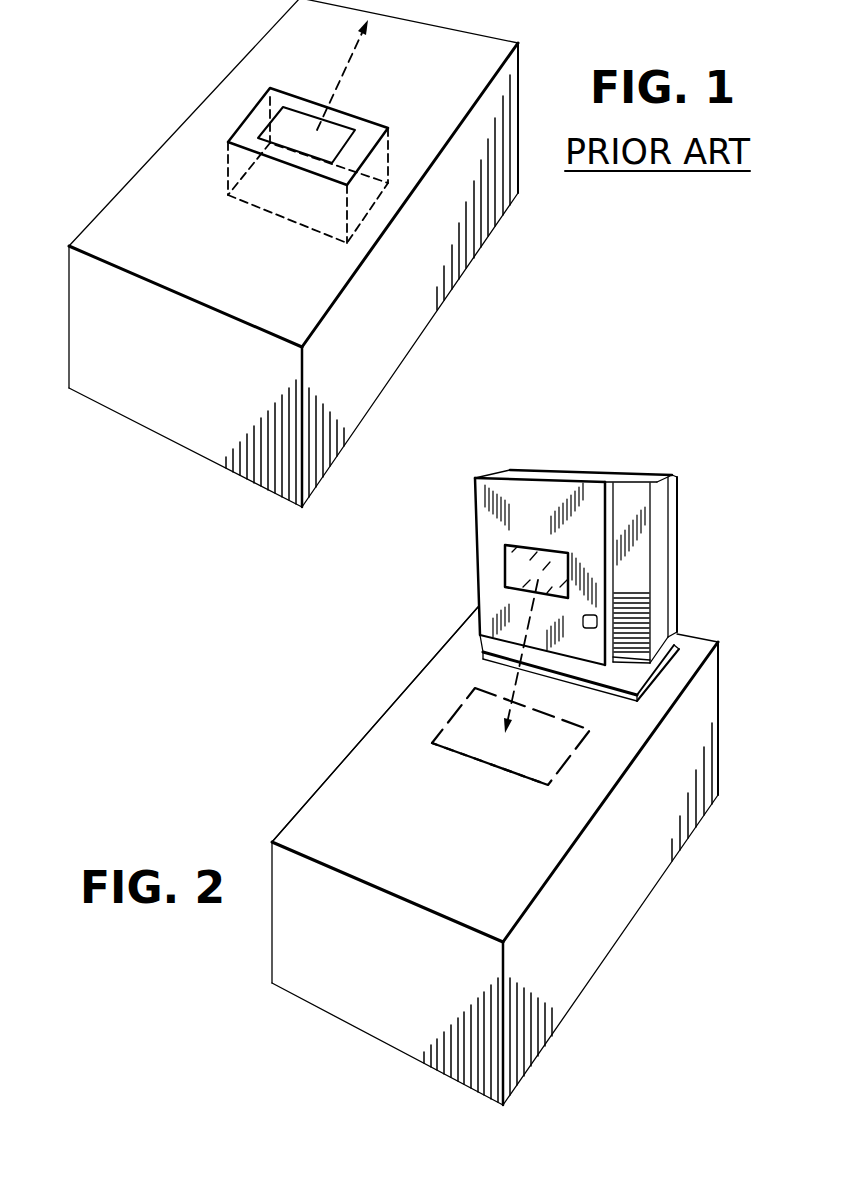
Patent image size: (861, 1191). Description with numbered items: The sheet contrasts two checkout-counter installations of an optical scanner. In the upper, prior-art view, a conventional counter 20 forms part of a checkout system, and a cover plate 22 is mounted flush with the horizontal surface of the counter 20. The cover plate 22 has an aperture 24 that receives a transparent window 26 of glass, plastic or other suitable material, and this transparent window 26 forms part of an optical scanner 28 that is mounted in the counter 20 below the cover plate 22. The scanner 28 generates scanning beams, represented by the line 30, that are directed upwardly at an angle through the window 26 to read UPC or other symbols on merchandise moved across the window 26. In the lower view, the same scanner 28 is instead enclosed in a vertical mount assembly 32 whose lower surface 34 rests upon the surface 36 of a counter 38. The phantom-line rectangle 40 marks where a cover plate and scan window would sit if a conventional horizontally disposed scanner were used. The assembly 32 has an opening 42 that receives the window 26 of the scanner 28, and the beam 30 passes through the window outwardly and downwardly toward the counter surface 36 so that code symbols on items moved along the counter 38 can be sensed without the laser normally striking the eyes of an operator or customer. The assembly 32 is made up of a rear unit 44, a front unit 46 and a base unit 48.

In FIG. 1, the counter 20 is at (112, 432).
In FIG. 1, the cover plate 22 is at (290, 95).
In FIG. 1, the aperture 24 is at (262, 135).
In FIG. 1, the transparent window 26 is at (343, 132).
In FIG. 2, the transparent window 26 is at (510, 553).
In FIG. 1, the optical scanner 28 is at (287, 222).
In FIG. 2, the scanning beam 30 is at (510, 690).
In FIG. 2, the vertical mount assembly 32 is at (598, 472).
In FIG. 2, the lower surface 34 is at (672, 663).
In FIG. 2, the surface 36 is at (458, 648).
In FIG. 2, the counter 38 is at (635, 905).
In FIG. 2, the phantom-line rectangle 40 is at (527, 782).
In FIG. 2, the opening 42 is at (505, 577).
In FIG. 2, the rear unit 44 is at (675, 553).
In FIG. 2, the front unit 46 is at (475, 500).
In FIG. 2, the base unit 48 is at (633, 686).